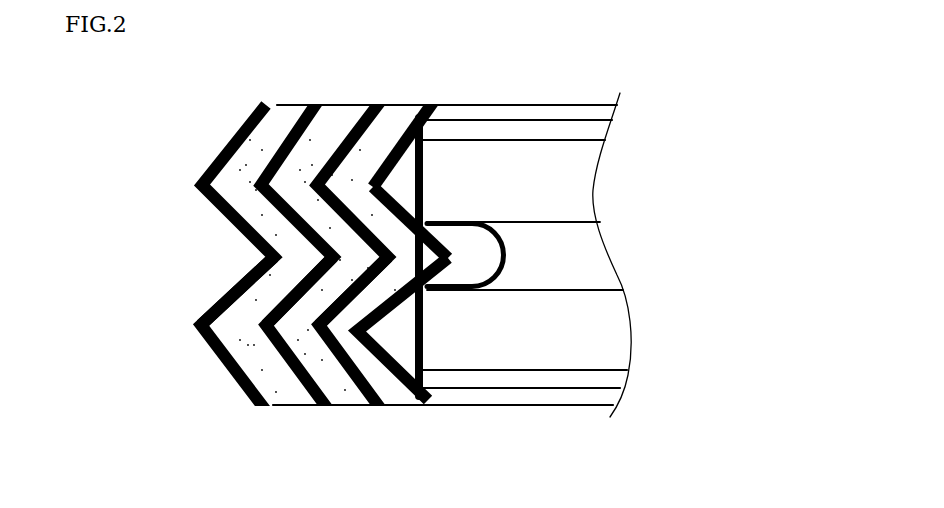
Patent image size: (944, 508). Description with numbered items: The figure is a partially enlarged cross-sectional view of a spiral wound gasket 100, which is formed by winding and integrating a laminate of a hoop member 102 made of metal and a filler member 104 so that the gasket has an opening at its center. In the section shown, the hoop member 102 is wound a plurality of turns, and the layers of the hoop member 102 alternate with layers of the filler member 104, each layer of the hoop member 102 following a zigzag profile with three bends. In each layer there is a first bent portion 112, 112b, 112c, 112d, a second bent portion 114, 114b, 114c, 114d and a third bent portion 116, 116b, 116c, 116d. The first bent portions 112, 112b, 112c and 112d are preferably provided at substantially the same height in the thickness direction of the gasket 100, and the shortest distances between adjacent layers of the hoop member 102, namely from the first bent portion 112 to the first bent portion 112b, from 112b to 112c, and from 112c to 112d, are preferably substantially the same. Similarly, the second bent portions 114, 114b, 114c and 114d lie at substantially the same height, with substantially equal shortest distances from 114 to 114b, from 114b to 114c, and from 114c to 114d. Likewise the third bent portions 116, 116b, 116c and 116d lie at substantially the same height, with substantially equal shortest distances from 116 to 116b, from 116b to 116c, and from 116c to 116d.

The spiral wound gasket 100 is at (402, 60).
The hoop member 102 is at (247, 387).
The filler member 104 is at (288, 394).
The first bent portion 112 is at (196, 185).
The first bent portion 112b is at (258, 182).
The first bent portion 112c is at (322, 178).
The first bent portion 112d is at (425, 160).
The second bent portion 114 is at (280, 252).
The second bent portion 114b is at (332, 247).
The second bent portion 114c is at (393, 253).
The second bent portion 114d is at (447, 250).
The third bent portion 116 is at (195, 325).
The third bent portion 116b is at (253, 330).
The third bent portion 116c is at (287, 318).
The third bent portion 116d is at (356, 328).